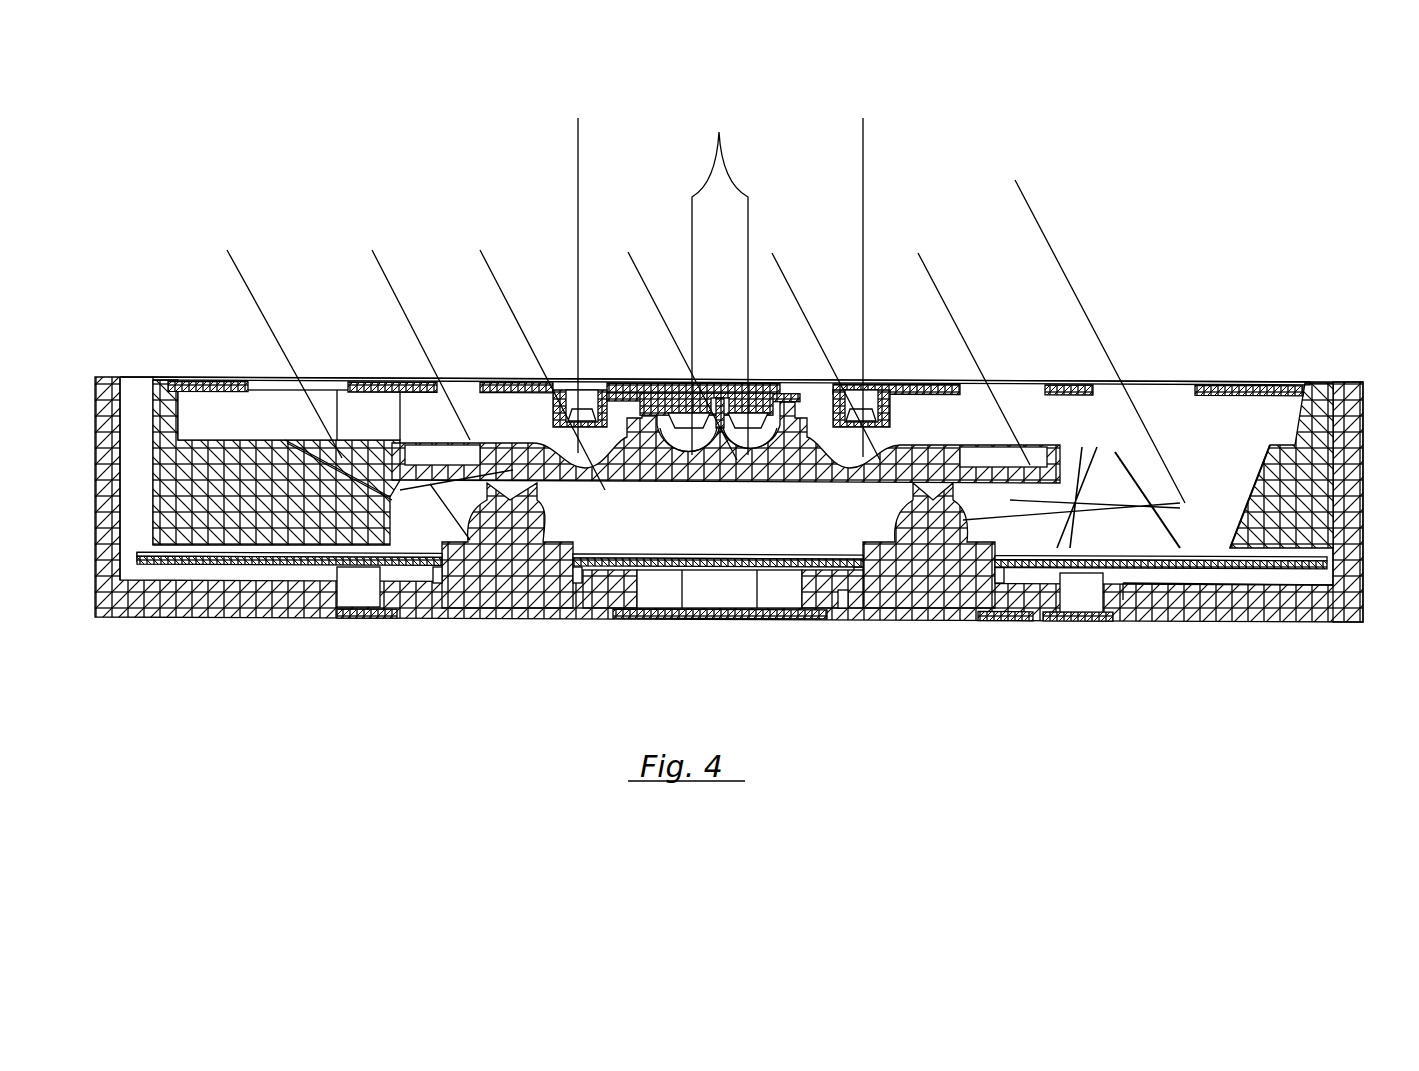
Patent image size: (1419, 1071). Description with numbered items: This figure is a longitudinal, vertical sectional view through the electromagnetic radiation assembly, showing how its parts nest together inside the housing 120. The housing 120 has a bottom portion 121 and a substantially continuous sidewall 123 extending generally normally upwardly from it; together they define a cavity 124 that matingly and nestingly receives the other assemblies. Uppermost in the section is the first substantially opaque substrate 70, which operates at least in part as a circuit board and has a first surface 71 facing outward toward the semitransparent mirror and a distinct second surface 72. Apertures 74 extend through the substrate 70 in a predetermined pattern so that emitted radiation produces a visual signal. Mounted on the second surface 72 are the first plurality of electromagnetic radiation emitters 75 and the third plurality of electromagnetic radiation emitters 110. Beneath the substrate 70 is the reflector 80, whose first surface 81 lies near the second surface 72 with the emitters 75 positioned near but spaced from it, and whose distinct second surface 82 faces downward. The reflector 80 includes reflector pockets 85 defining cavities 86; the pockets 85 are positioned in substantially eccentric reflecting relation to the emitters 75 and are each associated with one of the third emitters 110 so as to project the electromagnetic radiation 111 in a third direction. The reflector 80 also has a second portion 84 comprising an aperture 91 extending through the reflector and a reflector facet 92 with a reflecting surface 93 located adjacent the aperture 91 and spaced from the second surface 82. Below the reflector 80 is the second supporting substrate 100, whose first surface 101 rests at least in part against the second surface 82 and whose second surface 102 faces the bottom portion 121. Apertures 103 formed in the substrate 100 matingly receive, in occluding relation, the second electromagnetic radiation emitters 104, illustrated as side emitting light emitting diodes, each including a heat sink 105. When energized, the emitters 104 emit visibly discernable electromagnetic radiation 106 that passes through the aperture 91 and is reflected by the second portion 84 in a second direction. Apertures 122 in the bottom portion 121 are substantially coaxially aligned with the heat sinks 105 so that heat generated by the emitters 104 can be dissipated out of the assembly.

The first substantially opaque substrate 70 is at (1215, 386).
The first surface 71 is at (1267, 386).
The second surface 72 is at (1253, 463).
The apertures 74 is at (338, 378).
The first plurality of electromagnetic radiation emitters 75 is at (590, 400).
The reflector 80 is at (1288, 512).
The first surface 81 is at (933, 446).
The second surface 82 is at (630, 607).
The second portion 84 is at (348, 562).
The reflector pockets 85 is at (577, 400).
The cavities 86 is at (614, 406).
The aperture 91 is at (395, 440).
The reflector facet 92 is at (345, 447).
The reflecting surface 93 is at (1220, 556).
The second supporting substrate 100 is at (766, 607).
The first surface 101 is at (690, 600).
The second surface 102 is at (1121, 572).
The apertures 103 is at (846, 616).
The second electromagnetic radiation emitters 104 is at (947, 562).
The heat sink 105 is at (492, 582).
The visibly discernable electromagnetic radiation 106 is at (247, 288).
The third plurality of electromagnetic radiation emitters 110 is at (716, 398).
The electromagnetic radiation 111 is at (720, 274).
The housing 120 is at (1364, 537).
The bottom portion 121 is at (1192, 612).
The apertures 122 is at (578, 620).
The sidewall 123 is at (110, 378).
The cavity 124 is at (206, 562).